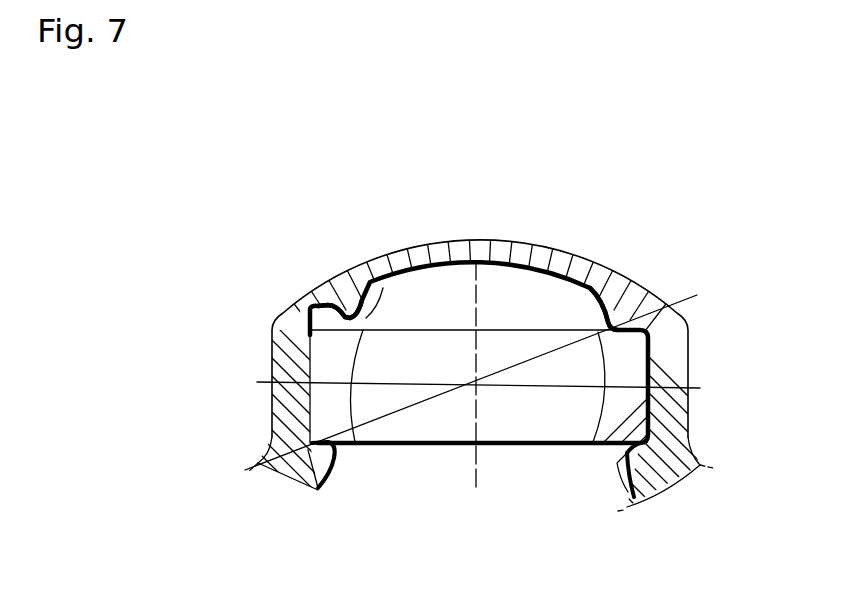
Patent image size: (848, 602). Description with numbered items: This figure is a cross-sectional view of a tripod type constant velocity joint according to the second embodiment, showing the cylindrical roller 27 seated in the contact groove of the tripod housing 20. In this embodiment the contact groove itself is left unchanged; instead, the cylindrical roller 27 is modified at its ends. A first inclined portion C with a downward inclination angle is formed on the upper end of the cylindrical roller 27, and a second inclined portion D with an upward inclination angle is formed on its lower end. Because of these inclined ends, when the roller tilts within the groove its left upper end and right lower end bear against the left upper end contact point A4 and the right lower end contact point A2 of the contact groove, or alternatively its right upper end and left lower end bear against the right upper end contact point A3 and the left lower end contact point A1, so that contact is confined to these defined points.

The tripod housing 20 is at (670, 428).
The cylindrical roller 27 is at (658, 352).
The first inclined portion C is at (387, 262).
The second inclined portion D is at (598, 448).
The left lower end contact point A1 is at (331, 463).
The right lower end contact point A2 is at (637, 485).
The right upper end contact point A3 is at (612, 312).
The left upper end contact point A4 is at (345, 315).